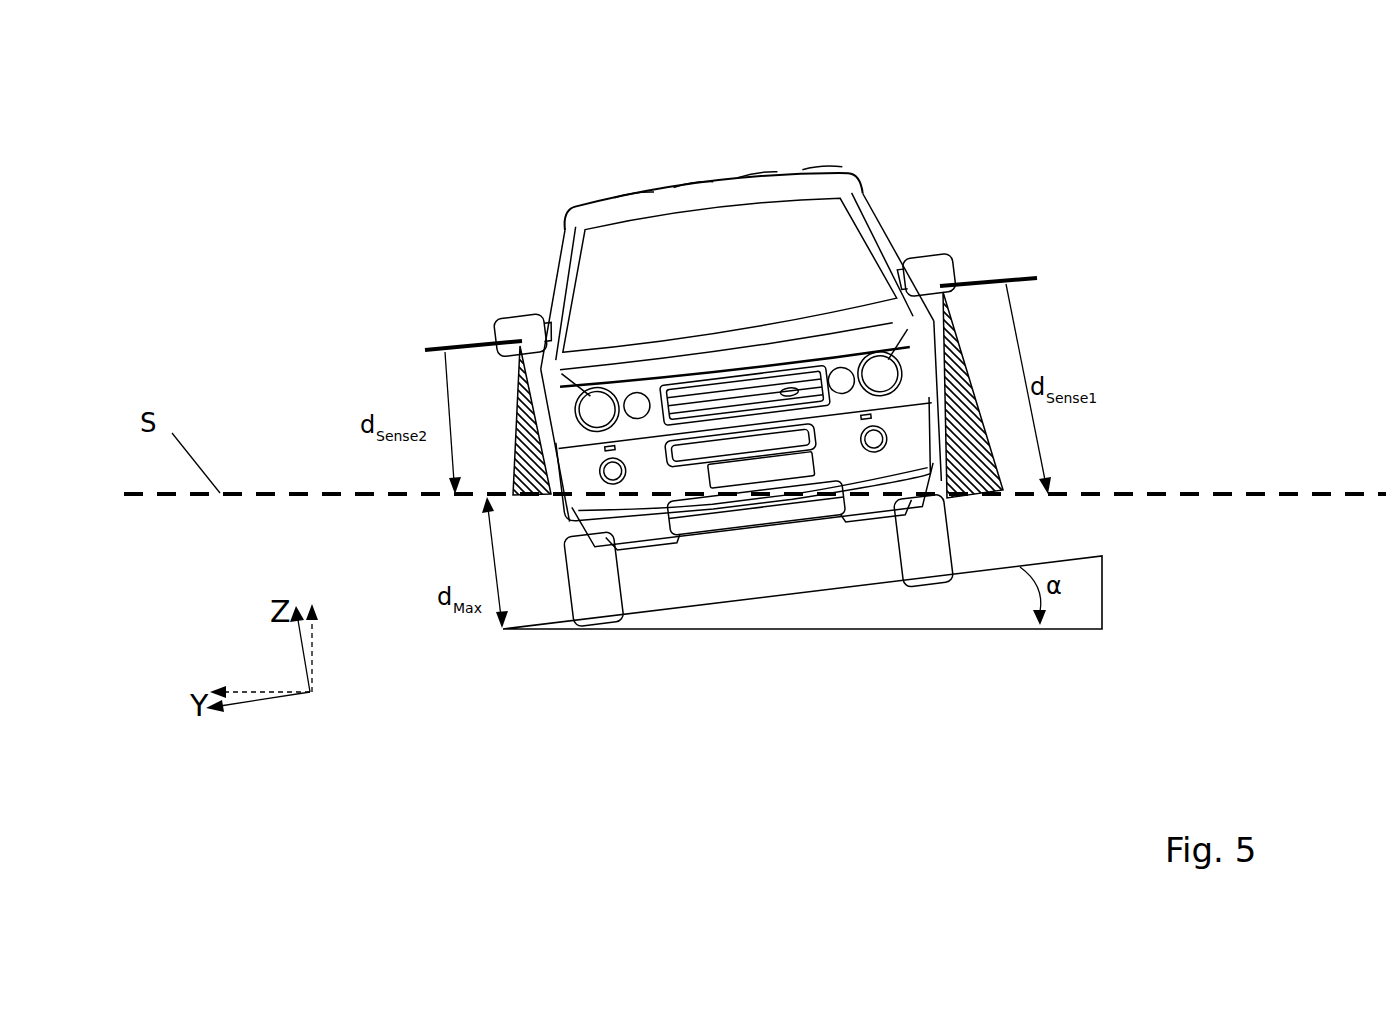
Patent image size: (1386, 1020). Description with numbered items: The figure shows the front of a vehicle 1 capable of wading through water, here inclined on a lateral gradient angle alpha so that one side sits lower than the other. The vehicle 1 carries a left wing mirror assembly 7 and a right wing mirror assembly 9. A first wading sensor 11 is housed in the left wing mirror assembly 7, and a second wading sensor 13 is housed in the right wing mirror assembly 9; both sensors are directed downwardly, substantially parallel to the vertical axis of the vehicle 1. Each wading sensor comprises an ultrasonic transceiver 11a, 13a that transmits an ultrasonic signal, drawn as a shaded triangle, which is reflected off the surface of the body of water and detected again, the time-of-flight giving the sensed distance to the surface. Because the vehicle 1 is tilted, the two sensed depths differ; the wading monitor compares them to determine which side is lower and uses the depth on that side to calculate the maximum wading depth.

The vehicle 1 is at (822, 165).
The left wing mirror assembly 7 is at (942, 265).
The right wing mirror assembly 9 is at (510, 318).
The first wading sensor 11 is at (978, 263).
The ultrasonic transceiver 11a is at (943, 293).
The second wading sensor 13 is at (466, 333).
The ultrasonic transceiver 13a is at (522, 341).